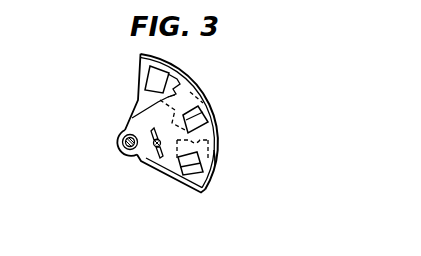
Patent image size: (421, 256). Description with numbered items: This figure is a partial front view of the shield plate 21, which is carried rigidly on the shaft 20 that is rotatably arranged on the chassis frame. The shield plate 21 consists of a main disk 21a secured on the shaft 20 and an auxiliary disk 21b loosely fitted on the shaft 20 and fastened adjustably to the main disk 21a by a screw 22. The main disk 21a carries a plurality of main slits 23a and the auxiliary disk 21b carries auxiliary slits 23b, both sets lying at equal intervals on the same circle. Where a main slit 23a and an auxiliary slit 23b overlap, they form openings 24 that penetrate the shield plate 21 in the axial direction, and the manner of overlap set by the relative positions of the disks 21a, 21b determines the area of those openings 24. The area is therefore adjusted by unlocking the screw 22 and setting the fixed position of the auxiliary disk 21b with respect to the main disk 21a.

The shaft 20 is at (124, 141).
The shield plate 21 is at (222, 77).
The main disk 21a is at (157, 177).
The auxiliary disk 21b is at (182, 180).
The screw 22 is at (151, 148).
The main slits 23a is at (205, 179).
The auxiliary slits 23b is at (213, 126).
The openings 24 is at (214, 157).